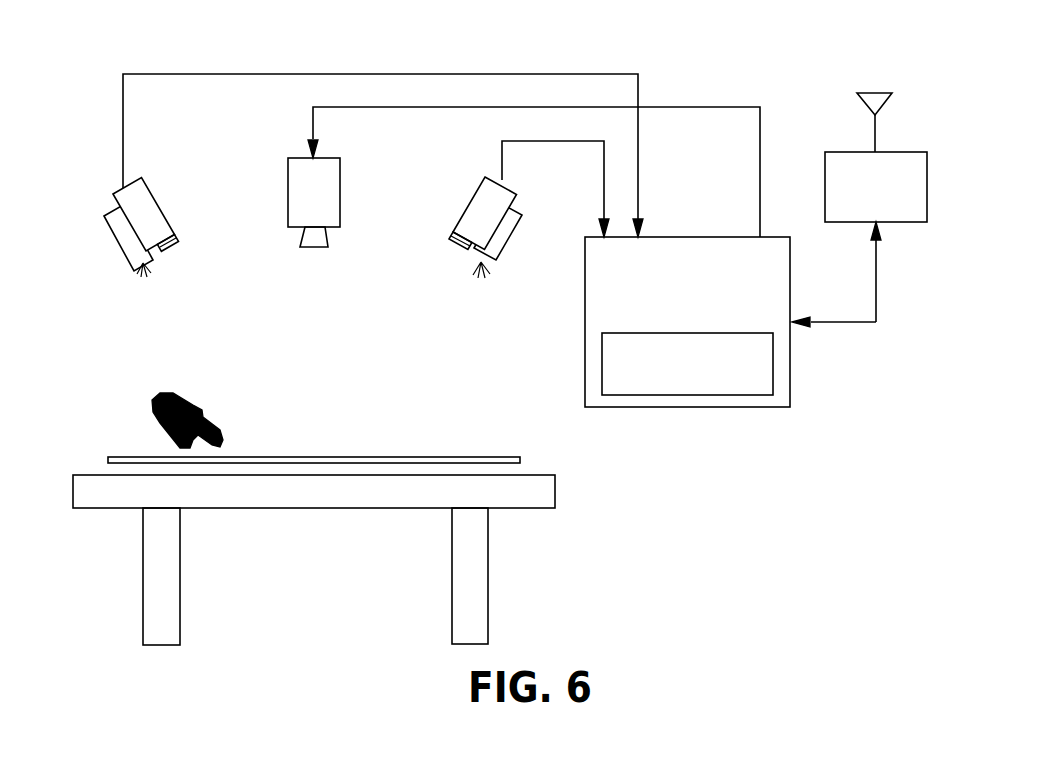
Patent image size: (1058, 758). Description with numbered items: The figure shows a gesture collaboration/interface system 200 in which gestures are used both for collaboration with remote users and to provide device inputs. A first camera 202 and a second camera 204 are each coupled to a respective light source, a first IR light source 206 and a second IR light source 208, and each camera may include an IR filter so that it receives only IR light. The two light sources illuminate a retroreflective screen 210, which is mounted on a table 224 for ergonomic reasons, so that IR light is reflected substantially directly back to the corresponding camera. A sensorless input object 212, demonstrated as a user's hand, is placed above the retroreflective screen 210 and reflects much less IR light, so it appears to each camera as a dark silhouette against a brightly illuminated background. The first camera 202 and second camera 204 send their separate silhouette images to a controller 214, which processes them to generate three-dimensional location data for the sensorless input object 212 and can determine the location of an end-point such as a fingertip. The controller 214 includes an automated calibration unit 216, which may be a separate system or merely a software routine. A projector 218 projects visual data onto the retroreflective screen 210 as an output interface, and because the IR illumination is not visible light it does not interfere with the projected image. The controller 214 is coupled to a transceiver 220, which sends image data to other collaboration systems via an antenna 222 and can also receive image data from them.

The gesture collaboration/interface system 200 is at (105, 66).
The first camera 202 is at (160, 194).
The second camera 204 is at (458, 230).
The first IR light source 206 is at (123, 250).
The second IR light source 208 is at (503, 253).
The retroreflective screen 210 is at (487, 457).
The sensorless input object 212 is at (193, 403).
The controller 214 is at (585, 347).
The automated calibration unit 216 is at (748, 395).
The projector 218 is at (340, 158).
The transceiver 220 is at (858, 152).
The antenna 222 is at (863, 93).
The table 224 is at (557, 475).